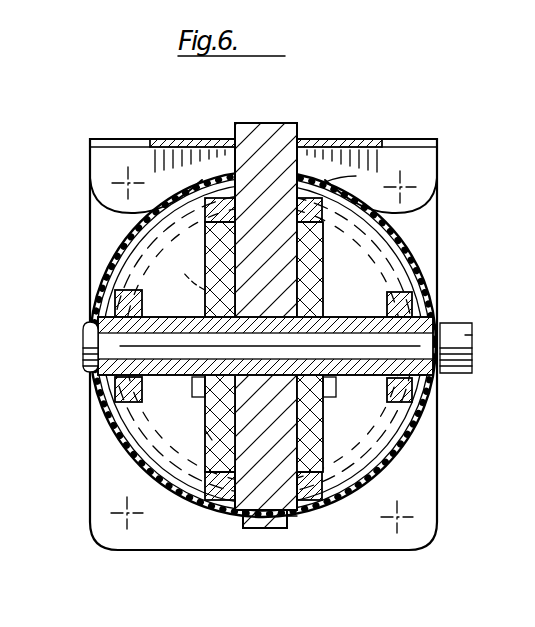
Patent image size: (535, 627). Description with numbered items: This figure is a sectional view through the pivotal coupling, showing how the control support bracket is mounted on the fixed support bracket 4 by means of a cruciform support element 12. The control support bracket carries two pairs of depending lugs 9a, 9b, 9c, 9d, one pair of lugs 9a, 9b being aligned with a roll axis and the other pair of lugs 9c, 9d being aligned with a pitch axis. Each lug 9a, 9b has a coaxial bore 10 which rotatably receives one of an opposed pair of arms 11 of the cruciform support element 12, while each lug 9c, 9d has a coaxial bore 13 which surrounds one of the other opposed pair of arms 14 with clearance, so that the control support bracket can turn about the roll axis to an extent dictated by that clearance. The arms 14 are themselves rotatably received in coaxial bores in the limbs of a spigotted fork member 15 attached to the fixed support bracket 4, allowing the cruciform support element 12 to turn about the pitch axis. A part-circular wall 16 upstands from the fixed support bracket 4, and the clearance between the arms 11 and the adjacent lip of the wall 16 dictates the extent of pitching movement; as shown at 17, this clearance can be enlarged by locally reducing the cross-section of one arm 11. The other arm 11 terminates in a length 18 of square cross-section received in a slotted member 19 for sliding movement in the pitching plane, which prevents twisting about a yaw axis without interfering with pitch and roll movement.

The fixed support bracket 4 is at (343, 552).
The depending lug 9a is at (328, 195).
The depending lug 9b is at (298, 525).
The depending lug 9c is at (436, 378).
The depending lug 9d is at (115, 300).
The coaxial bore 10 is at (226, 210).
The arm 11 is at (320, 275).
The cruciform support element 12 is at (205, 290).
The coaxial bore 13 is at (436, 312).
The arm 14 is at (200, 395).
The spigotted fork member 15 is at (212, 427).
The part-circular wall 16 is at (120, 445).
The locally reduced cross-section of arm 17 is at (240, 530).
The length of square cross-section 18 is at (268, 152).
The slotted member 19 is at (200, 147).